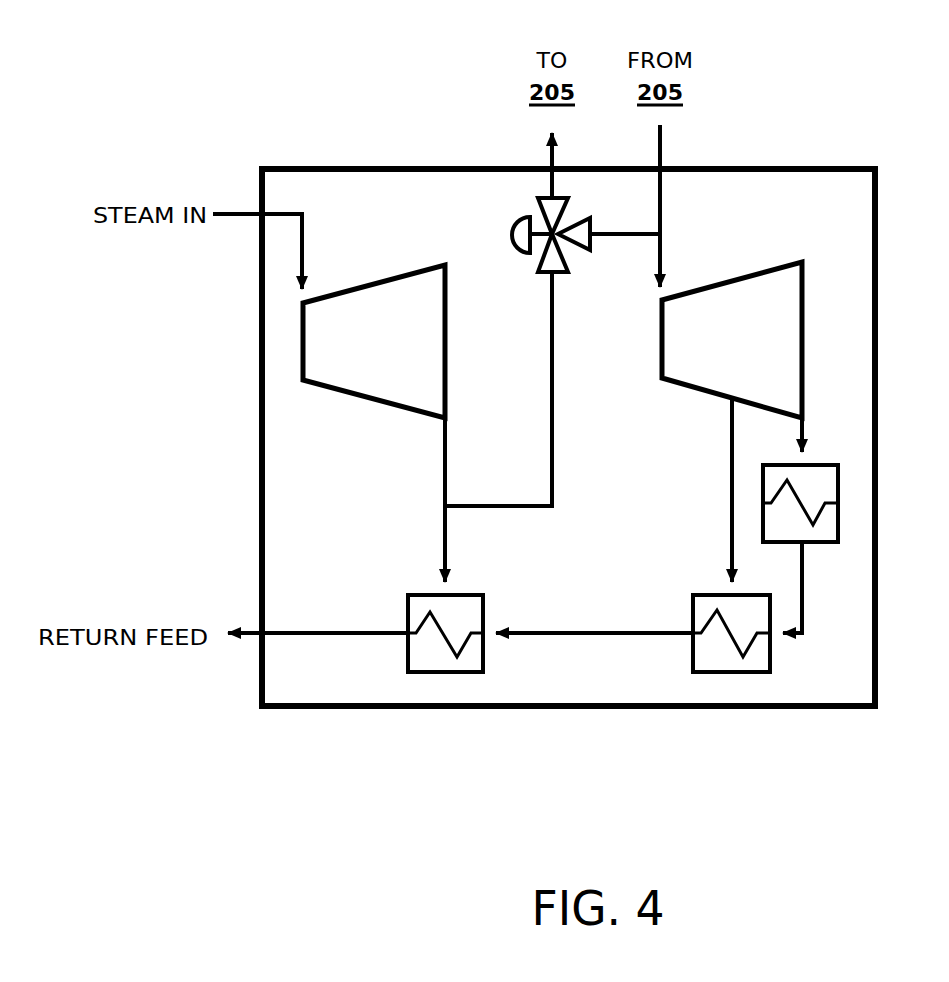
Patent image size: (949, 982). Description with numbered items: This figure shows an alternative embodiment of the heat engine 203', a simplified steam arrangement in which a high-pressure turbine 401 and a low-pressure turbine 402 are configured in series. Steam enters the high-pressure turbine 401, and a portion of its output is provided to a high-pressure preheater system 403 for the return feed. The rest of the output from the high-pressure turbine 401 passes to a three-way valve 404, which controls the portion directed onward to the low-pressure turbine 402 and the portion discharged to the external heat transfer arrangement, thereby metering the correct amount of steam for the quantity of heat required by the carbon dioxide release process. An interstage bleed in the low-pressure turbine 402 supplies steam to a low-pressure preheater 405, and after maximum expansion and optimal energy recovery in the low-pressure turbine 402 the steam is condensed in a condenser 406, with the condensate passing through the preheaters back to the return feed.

The heat engine 203' is at (590, 409).
The high-pressure turbine 401 is at (355, 355).
The low-pressure turbine 402 is at (709, 357).
The high-pressure preheater system 403 is at (420, 595).
The three-way valve 404 is at (522, 226).
The low-pressure preheater 405 is at (717, 595).
The condenser 406 is at (827, 465).